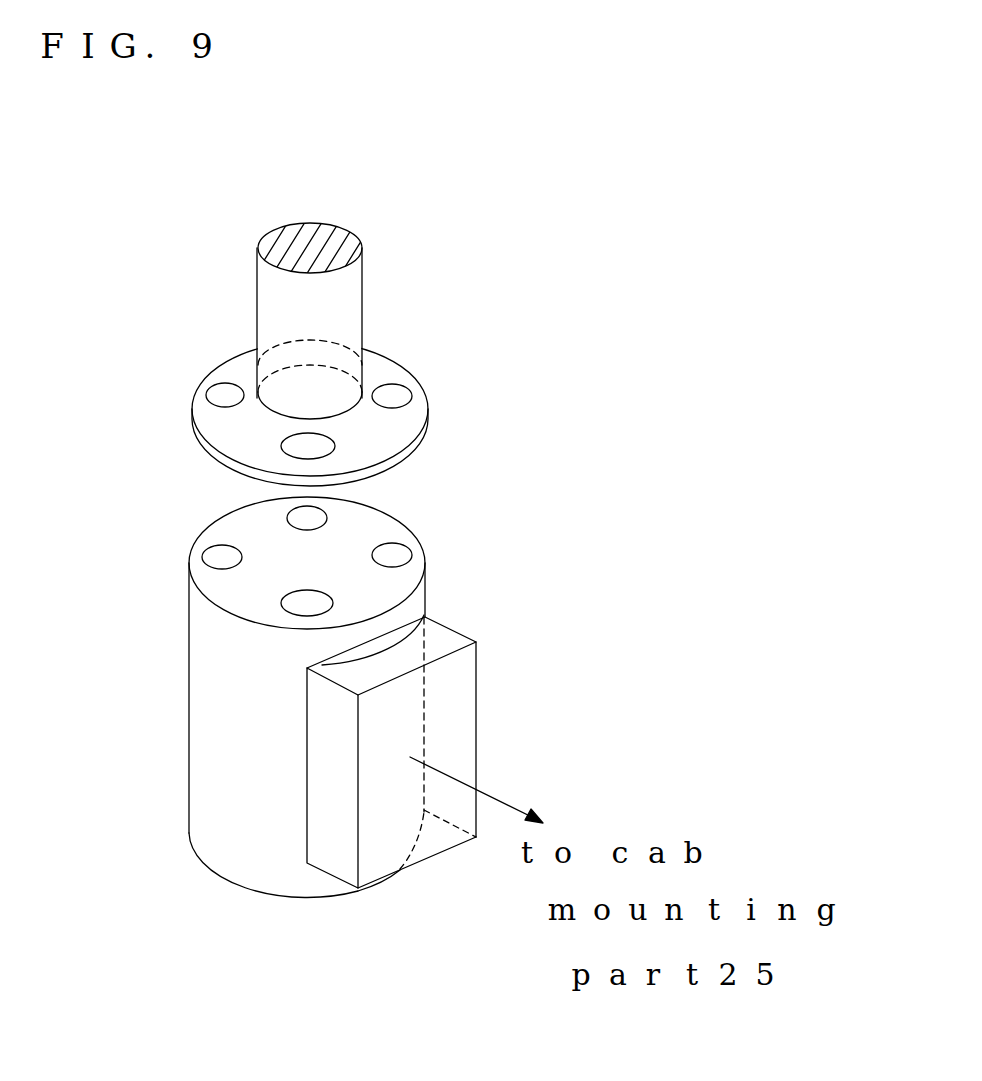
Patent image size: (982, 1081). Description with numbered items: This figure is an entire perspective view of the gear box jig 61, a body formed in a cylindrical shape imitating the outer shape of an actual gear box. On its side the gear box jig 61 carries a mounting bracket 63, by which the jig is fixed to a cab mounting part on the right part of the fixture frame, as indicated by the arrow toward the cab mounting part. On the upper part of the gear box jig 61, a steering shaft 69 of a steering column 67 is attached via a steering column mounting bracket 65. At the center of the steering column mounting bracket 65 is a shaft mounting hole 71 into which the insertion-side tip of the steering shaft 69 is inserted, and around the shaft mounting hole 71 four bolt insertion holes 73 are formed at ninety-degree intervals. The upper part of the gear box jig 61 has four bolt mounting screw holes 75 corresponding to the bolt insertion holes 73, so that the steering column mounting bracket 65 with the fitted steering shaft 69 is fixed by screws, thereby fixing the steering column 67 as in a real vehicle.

The gear box jig 61 is at (205, 707).
The mounting bracket 63 is at (466, 694).
The steering column mounting bracket 65 is at (380, 366).
The steering column 67 is at (293, 249).
The steering shaft 69 is at (273, 297).
The shaft mounting hole 71 is at (338, 408).
The bolt insertion holes 73 is at (300, 449).
The bolt mounting screw holes 75 is at (300, 520).